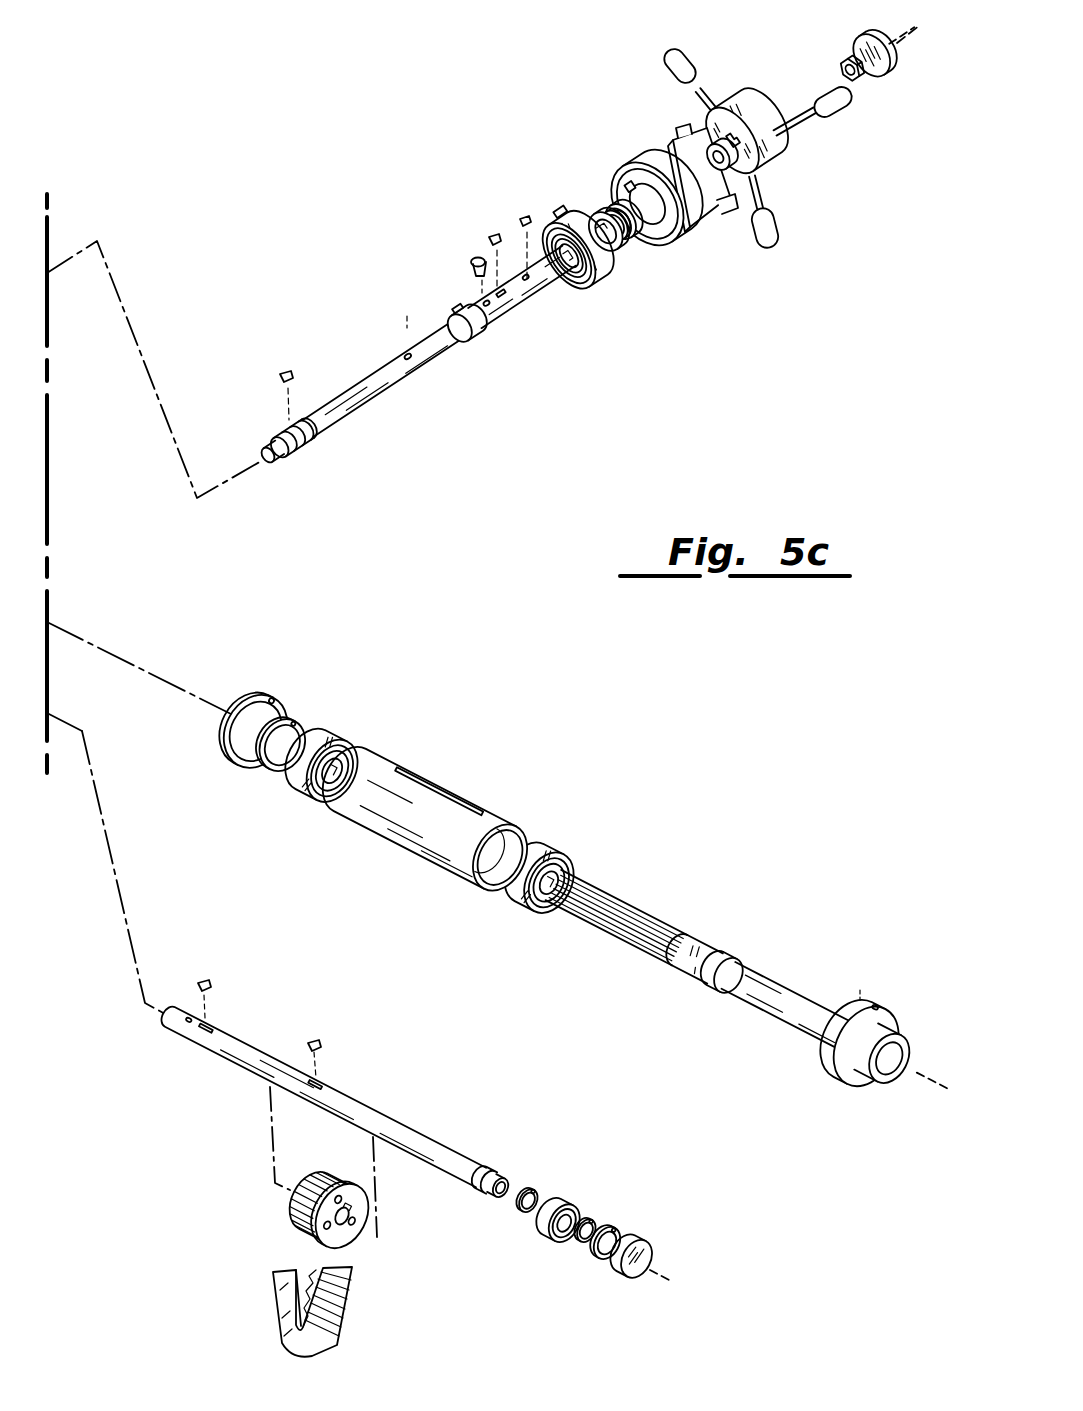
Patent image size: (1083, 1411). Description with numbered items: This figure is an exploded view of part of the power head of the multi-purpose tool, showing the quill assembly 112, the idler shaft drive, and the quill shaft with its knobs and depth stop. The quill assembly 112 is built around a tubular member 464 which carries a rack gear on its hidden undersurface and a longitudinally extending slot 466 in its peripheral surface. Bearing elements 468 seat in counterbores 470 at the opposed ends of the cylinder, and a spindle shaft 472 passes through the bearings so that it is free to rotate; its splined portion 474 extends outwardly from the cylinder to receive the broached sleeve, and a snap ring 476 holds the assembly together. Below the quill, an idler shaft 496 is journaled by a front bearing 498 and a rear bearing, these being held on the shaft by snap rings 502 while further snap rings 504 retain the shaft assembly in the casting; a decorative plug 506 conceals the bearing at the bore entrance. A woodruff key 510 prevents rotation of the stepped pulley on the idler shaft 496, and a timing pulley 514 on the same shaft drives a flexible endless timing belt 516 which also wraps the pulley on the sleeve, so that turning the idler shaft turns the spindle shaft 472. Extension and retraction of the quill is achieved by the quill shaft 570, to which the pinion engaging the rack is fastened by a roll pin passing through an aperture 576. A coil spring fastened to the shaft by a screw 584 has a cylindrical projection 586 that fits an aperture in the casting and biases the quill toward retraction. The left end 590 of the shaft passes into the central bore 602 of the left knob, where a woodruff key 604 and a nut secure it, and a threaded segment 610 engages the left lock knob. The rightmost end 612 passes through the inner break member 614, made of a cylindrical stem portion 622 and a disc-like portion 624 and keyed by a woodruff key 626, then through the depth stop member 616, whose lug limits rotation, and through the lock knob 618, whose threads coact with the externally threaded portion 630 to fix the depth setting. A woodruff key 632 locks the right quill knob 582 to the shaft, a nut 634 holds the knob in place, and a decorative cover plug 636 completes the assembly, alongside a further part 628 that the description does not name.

The quill assembly 112 is at (520, 790).
The tubular member 464 is at (460, 790).
The longitudinally extending slot 466 is at (417, 770).
The bearing elements 468 is at (342, 732).
The counterbores 470 is at (497, 893).
The spindle shaft 472 is at (773, 973).
The splined portion 474 is at (620, 893).
The snap ring 476 is at (298, 712).
The idler shaft 496 is at (373, 1107).
The front bearing 498 is at (548, 1240).
The snap rings 502 is at (535, 1190).
The snap rings 504 is at (617, 1230).
The decorative plug 506 is at (643, 1250).
The woodruff key 510 is at (208, 982).
The timing pulley 514 is at (290, 1212).
The timing belt 516 is at (270, 1298).
The quill shaft 570 is at (360, 380).
The aperture 576 is at (403, 350).
The right quill knob 582 is at (748, 108).
The screw 584 is at (468, 262).
The cylindrical projection 586 is at (560, 212).
The left end 590 is at (268, 458).
The central bore 602 is at (712, 128).
The woodruff key 604 is at (282, 373).
The threaded segment 610 is at (315, 443).
The rightmost end 612 is at (554, 282).
The inner break member 614 is at (631, 250).
The depth stop member 616 is at (637, 165).
The lock knob 618 is at (728, 205).
The cylindrical stem portion 622 is at (620, 212).
The disc-like portion 624 is at (600, 224).
The woodruff key 626 is at (490, 238).
The washer 628 is at (636, 246).
The externally threaded portion 630 is at (520, 293).
The woodruff key 632 is at (520, 218).
The nut 634 is at (846, 60).
The decorative cover plug 636 is at (893, 52).